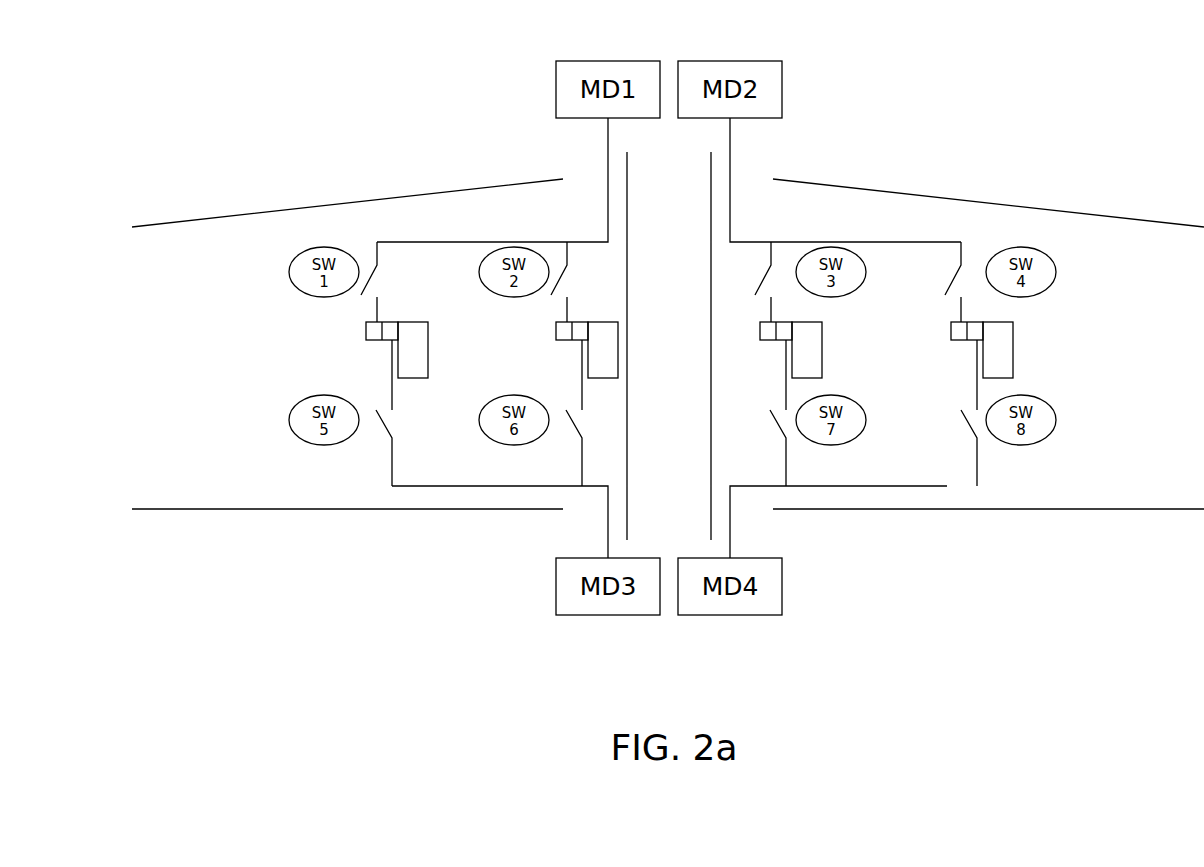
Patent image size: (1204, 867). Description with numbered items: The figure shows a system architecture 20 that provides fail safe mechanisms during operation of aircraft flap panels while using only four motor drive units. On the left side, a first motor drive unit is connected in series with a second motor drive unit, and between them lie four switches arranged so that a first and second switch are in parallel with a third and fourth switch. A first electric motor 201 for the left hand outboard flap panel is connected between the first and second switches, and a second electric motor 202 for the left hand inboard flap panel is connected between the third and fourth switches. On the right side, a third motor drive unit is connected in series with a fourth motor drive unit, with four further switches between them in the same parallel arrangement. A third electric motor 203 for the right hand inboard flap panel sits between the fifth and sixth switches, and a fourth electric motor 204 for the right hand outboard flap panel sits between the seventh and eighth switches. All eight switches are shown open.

The system architecture 20 is at (973, 135).
The first electric motor 201 is at (397, 322).
The second electric motor 202 is at (583, 322).
The third electric motor 203 is at (813, 322).
The fourth electric motor 204 is at (1013, 345).